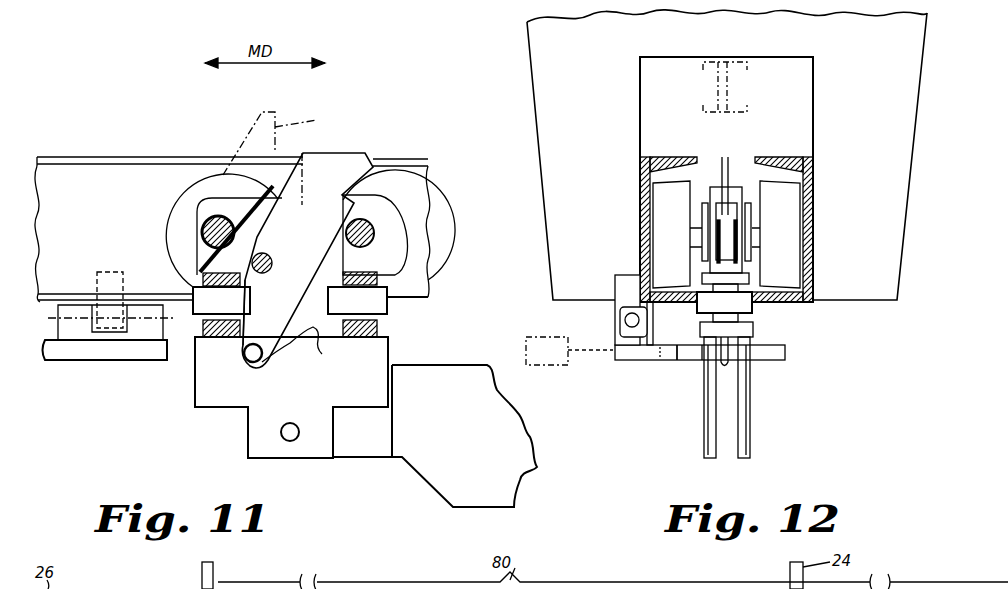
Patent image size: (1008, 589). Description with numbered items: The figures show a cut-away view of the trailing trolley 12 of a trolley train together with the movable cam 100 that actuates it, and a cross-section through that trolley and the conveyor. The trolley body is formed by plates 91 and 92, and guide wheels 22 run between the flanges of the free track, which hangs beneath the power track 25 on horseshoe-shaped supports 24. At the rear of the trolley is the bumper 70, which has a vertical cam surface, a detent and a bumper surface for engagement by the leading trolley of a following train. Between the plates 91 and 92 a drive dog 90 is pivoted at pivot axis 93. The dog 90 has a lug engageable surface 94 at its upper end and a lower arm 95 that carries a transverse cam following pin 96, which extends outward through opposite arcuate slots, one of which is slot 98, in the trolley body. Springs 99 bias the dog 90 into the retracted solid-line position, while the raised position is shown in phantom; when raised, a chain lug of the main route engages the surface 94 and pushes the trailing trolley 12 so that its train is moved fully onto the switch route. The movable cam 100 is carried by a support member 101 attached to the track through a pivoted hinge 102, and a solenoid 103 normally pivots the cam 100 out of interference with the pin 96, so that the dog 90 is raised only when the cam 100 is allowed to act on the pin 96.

In FIG. 11, the trailing trolley 12 is at (22, 87).
In FIG. 11, the guide wheels 22 is at (290, 304).
In FIG. 12, the guide wheels 22 is at (724, 302).
In FIG. 12, the horseshoe-shaped supports 24 is at (556, 88).
In FIG. 12, the power track 25 is at (741, 88).
In FIG. 11, the bumper 70 is at (447, 456).
In FIG. 11, the drive dog 90 is at (333, 167).
In FIG. 12, the drive dog 90 is at (725, 160).
In FIG. 12, the plate 91 is at (702, 393).
In FIG. 11, the plate 92 is at (291, 397).
In FIG. 12, the plate 92 is at (752, 397).
In FIG. 11, the pivot axis 93 is at (268, 259).
In FIG. 11, the lug engageable surface 94 is at (375, 167).
In FIG. 11, the lower arm 95 is at (247, 343).
In FIG. 11, the cam following pin 96 is at (252, 364).
In FIG. 12, the cam following pin 96 is at (688, 358).
In FIG. 11, the arcuate slot 98 is at (322, 354).
In FIG. 11, the springs 99 is at (258, 229).
In FIG. 12, the springs 99 is at (710, 187).
In FIG. 11, the movable cam 100 is at (130, 352).
In FIG. 12, the movable cam 100 is at (663, 362).
In FIG. 11, the support member 101 is at (122, 250).
In FIG. 12, the support member 101 is at (620, 280).
In FIG. 11, the pivoted hinge 102 is at (77, 295).
In FIG. 12, the pivoted hinge 102 is at (622, 330).
In FIG. 12, the solenoid 103 is at (550, 365).